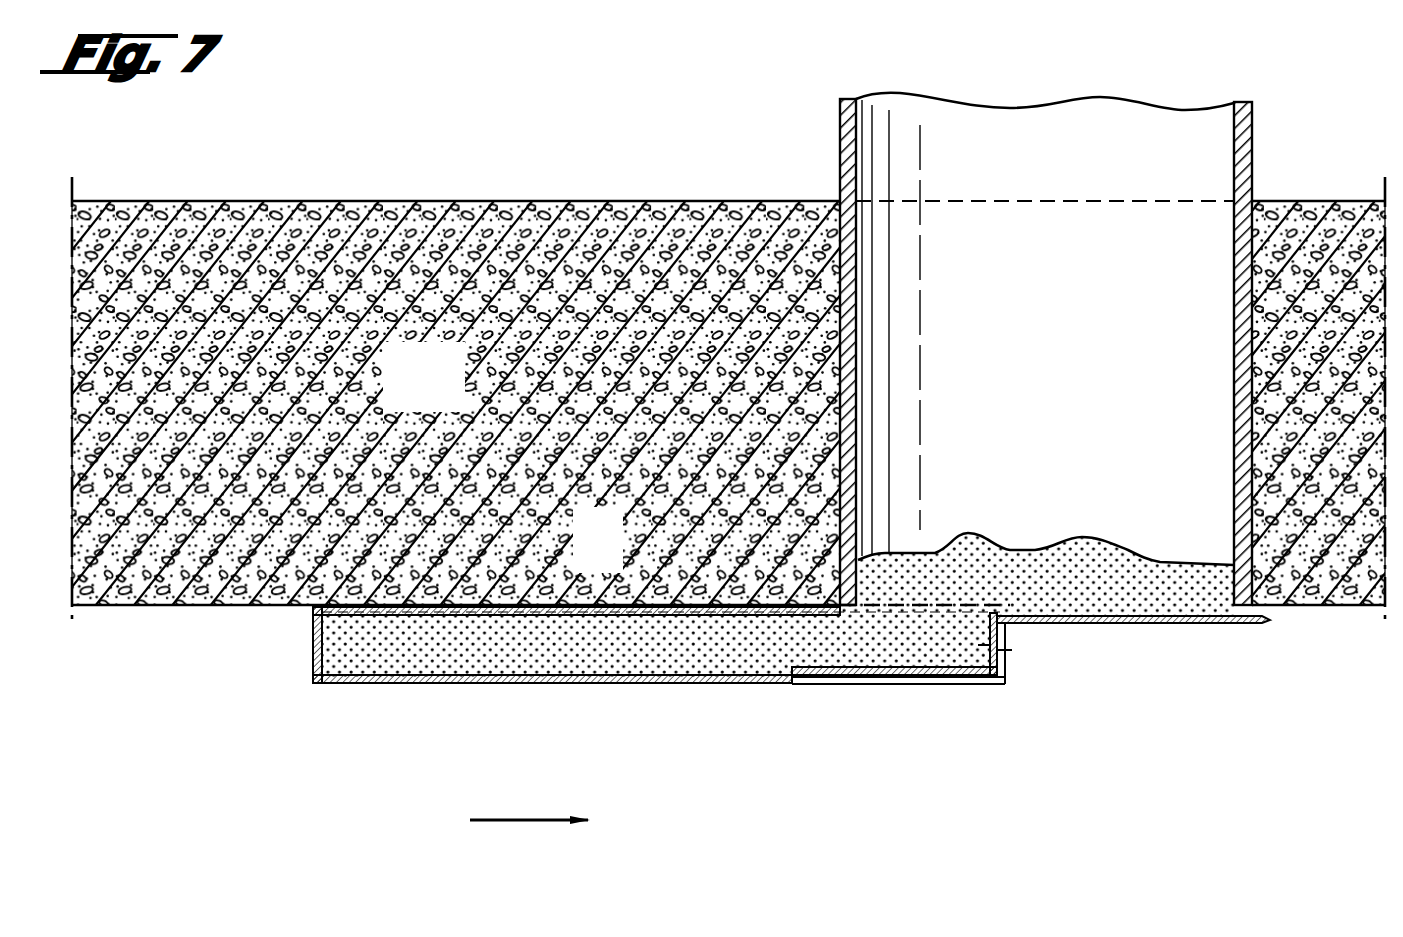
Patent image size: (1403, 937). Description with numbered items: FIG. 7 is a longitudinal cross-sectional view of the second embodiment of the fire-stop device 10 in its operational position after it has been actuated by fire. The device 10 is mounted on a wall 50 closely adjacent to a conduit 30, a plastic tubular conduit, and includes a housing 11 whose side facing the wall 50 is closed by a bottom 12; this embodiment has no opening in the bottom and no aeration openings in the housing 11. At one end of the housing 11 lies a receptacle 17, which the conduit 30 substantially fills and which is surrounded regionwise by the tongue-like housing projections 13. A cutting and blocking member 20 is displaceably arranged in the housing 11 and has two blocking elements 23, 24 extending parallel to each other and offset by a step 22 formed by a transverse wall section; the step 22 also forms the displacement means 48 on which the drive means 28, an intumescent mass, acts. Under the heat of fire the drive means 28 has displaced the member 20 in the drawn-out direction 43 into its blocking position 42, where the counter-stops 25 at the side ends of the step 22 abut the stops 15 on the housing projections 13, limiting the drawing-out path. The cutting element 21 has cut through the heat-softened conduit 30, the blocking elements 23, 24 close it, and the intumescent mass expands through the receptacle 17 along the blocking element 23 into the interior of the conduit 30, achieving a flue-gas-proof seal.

The device 10 is at (929, 790).
The housing 11 is at (546, 686).
The bottom 12 is at (595, 606).
The housing projections 13 is at (988, 686).
The stops 15 is at (1008, 633).
The receptacle 17 is at (941, 641).
The cutting and blocking member 20 is at (830, 690).
The cutting element 21 is at (1272, 620).
The step 22 is at (987, 603).
The blocking element 23 is at (1199, 625).
The blocking element 24 is at (857, 686).
The counter-stops 25 is at (1007, 652).
The drive means 28 is at (1090, 566).
The conduit 30 is at (843, 156).
The blocking position 42 is at (1036, 676).
The drawn-out direction 43 is at (522, 826).
The displacement means 48 is at (988, 647).
The wall 50 is at (446, 400).